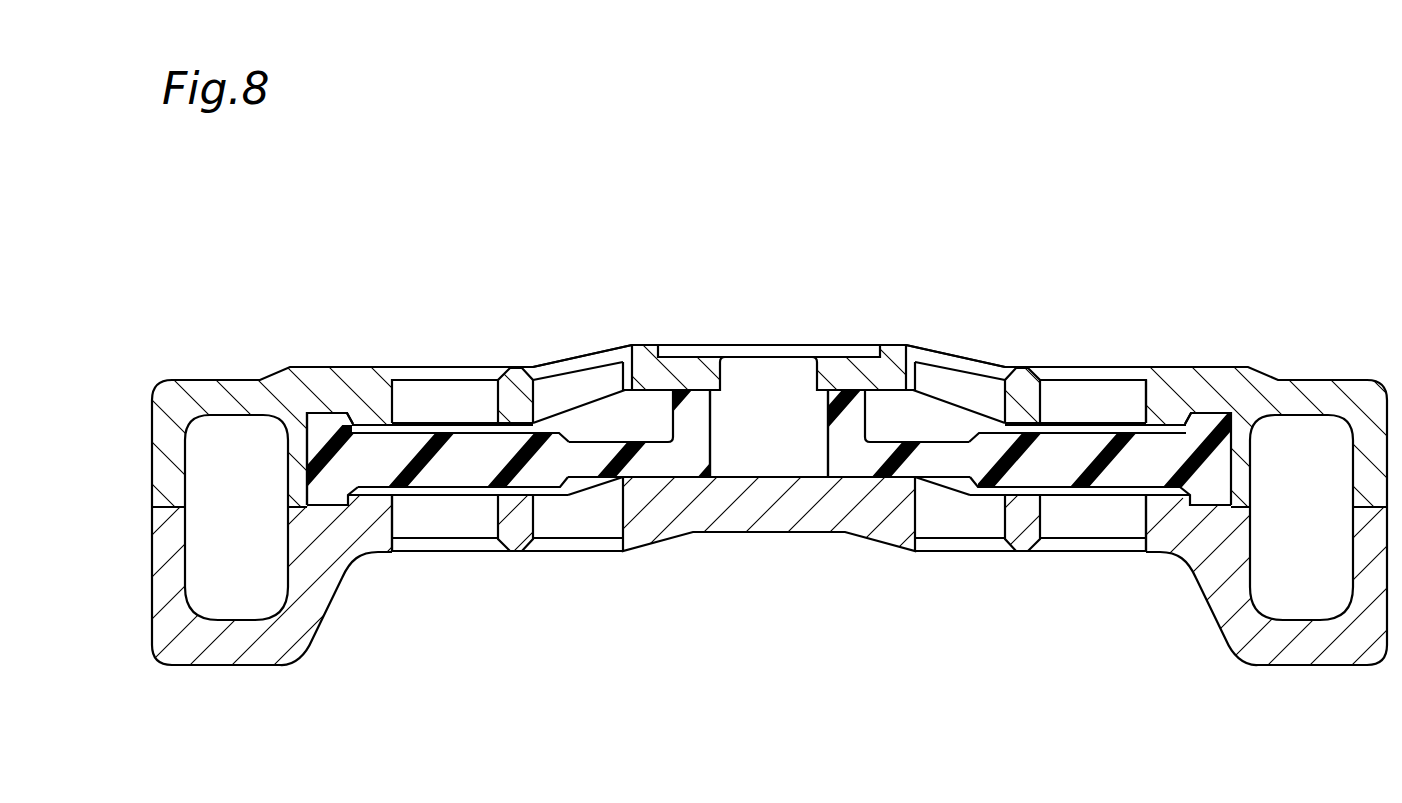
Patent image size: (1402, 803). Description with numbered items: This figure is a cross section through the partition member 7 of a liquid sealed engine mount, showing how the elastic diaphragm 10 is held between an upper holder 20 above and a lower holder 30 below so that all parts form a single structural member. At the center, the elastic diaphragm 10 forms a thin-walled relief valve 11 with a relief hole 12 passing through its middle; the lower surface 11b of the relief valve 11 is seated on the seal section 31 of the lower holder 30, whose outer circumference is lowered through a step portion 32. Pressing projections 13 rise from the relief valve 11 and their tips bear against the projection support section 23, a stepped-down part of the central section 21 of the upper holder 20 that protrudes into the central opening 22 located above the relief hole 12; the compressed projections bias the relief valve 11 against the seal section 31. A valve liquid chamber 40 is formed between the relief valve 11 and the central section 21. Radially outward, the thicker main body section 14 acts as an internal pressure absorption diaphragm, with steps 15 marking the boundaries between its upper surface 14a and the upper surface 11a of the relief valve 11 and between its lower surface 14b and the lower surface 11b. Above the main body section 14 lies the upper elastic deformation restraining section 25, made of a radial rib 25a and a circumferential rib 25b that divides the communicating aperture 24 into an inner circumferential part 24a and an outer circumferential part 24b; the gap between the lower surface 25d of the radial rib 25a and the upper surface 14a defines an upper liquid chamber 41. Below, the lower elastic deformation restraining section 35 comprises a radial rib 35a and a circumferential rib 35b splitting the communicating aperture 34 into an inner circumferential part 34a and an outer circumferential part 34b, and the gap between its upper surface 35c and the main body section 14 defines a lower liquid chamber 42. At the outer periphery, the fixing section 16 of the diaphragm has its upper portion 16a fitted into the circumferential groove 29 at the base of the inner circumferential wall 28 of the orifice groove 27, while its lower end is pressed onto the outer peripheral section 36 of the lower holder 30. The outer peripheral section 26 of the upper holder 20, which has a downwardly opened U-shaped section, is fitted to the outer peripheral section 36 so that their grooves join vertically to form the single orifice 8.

The partition member 7 is at (413, 267).
The orifice 8 is at (205, 468).
The elastic diaphragm 10 is at (385, 432).
The relief valve 11 is at (686, 465).
The upper surface of the relief valve 11a is at (880, 430).
The lower surface of the relief valve 11b is at (855, 482).
The relief hole 12 is at (822, 465).
The pressing projection 13 is at (690, 388).
The main body section 14 is at (440, 492).
The upper surface of the main body section 14a is at (476, 428).
The lower surface of the main body section 14b is at (533, 498).
The step 15 is at (572, 434).
The fixing section 16 is at (1250, 458).
The upper portion of the fixing section 16a is at (1215, 420).
The upper holder 20 is at (310, 360).
The central section 21 is at (565, 363).
The central opening 22 is at (742, 352).
The projection support section 23 is at (658, 378).
The communicating aperture 24 is at (557, 254).
The inner circumferential part 24a is at (556, 380).
The outer circumferential part 24b is at (500, 392).
The upper elastic deformation restraining section 25 is at (1065, 254).
The radial rib 25a is at (1090, 378).
The circumferential rib 25b is at (1012, 395).
The lower surface of the radial rib 25d is at (965, 420).
The outer peripheral section 26 is at (170, 390).
The orifice groove 27 is at (185, 515).
The inner circumferential wall 28 is at (1243, 483).
The circumferential groove 29 is at (1188, 418).
The lower holder 30 is at (376, 503).
The seal section 31 is at (767, 503).
The step portion 32 is at (605, 490).
The communicating aperture 34 is at (530, 625).
The inner circumferential part 34a is at (516, 552).
The outer circumferential part 34b is at (468, 540).
The lower elastic deformation restraining section 35 is at (1030, 617).
The radial rib 35a is at (1100, 540).
The circumferential rib 35b is at (1022, 552).
The upper surface of the lower elastic deformation restraining section 35c is at (950, 500).
The outer peripheral section 36 is at (170, 625).
The valve liquid chamber 40 is at (792, 408).
The upper liquid chamber 41 is at (424, 425).
The lower liquid chamber 42 is at (398, 553).